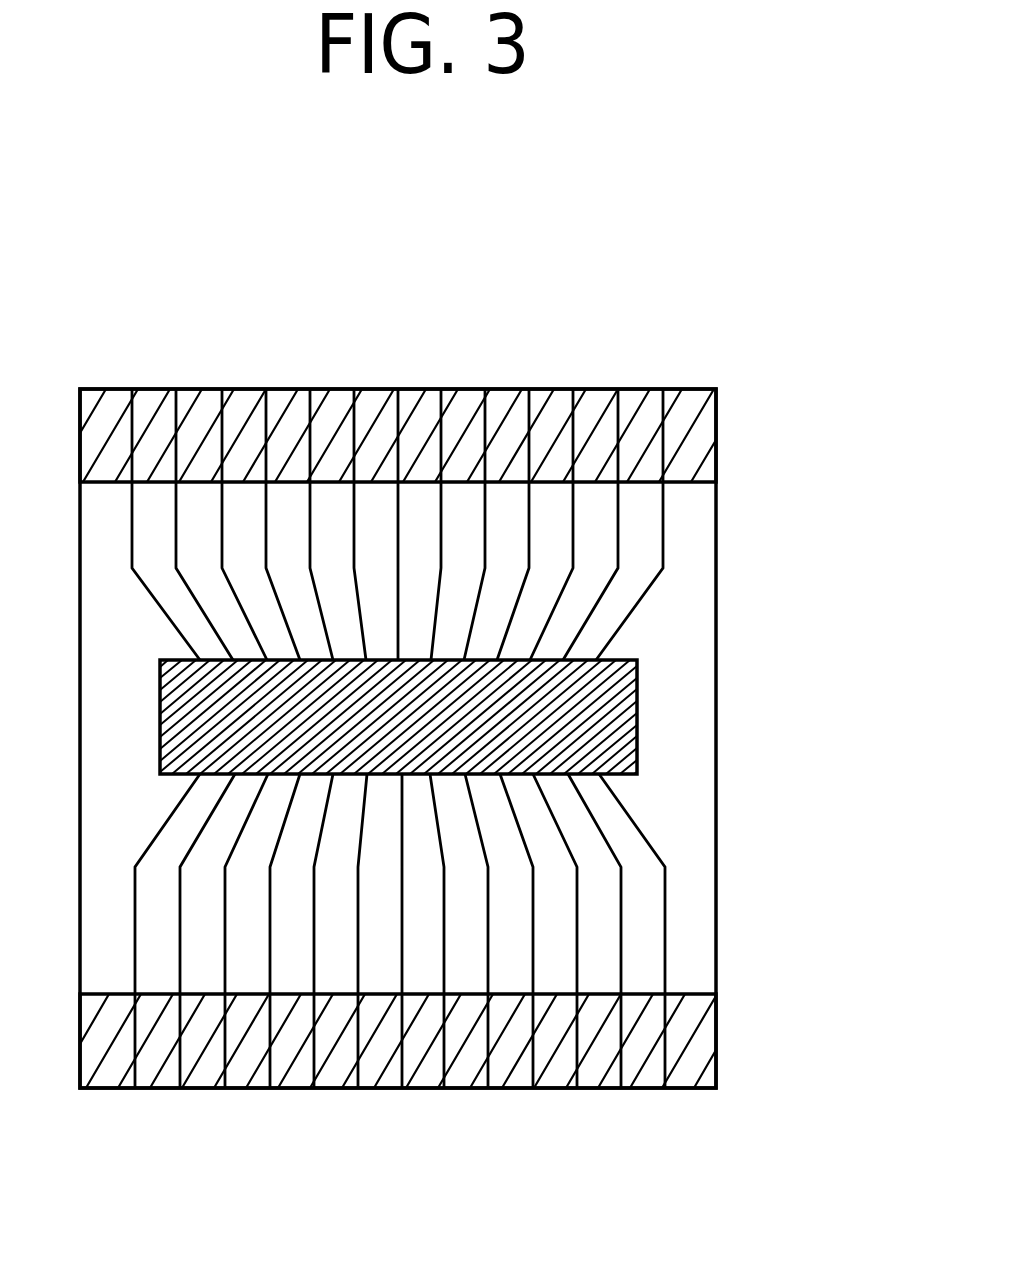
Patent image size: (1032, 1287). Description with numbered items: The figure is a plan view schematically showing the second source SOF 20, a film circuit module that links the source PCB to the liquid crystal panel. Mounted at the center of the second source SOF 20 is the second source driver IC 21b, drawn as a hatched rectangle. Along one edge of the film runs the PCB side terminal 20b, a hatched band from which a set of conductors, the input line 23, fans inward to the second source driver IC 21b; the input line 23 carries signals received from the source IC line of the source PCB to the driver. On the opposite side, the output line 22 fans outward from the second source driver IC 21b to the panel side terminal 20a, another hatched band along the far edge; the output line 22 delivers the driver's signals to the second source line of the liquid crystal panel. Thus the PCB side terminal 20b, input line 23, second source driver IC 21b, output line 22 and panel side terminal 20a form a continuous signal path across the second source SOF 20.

The second source SOF 20 is at (692, 830).
The panel side terminal 20a is at (97, 1091).
The PCB side terminal 20b is at (102, 408).
The second source driver IC 21b is at (603, 717).
The output line 22 is at (675, 1102).
The input line 23 is at (665, 377).